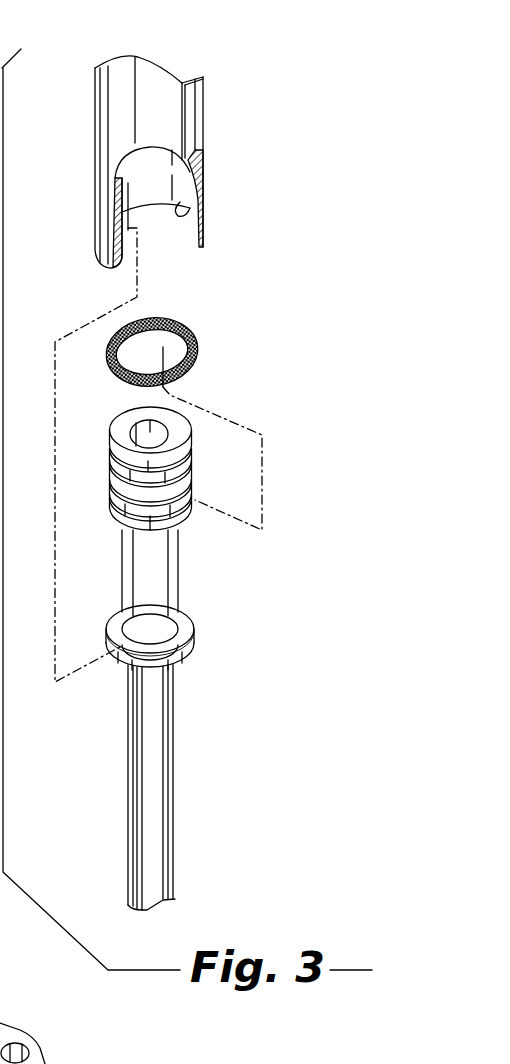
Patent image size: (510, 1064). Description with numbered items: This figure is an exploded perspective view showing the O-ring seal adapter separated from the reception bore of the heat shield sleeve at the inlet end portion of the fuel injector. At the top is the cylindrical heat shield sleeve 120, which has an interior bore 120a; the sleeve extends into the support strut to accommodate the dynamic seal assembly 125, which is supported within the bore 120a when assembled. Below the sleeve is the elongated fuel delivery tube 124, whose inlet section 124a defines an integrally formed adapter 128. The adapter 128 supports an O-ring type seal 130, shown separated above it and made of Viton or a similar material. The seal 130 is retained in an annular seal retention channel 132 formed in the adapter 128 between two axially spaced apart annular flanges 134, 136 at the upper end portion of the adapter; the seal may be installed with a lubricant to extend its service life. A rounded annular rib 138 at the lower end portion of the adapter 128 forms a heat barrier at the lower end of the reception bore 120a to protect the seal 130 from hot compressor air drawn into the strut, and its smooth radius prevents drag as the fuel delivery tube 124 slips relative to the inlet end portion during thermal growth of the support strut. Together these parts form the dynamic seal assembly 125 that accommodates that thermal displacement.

The heat shield sleeve 120 is at (107, 107).
The interior bore 120a is at (192, 215).
The dynamic seal assembly 125 is at (295, 307).
The adapter 128 is at (290, 528).
The O-ring seal 130 is at (188, 322).
The annular flange 134 is at (100, 452).
The seal retention channel 132 is at (190, 487).
The annular flange 136 is at (110, 505).
The inlet section 124a is at (163, 593).
The rounded annular rib 138 is at (182, 663).
The fuel delivery tube 124 is at (128, 800).